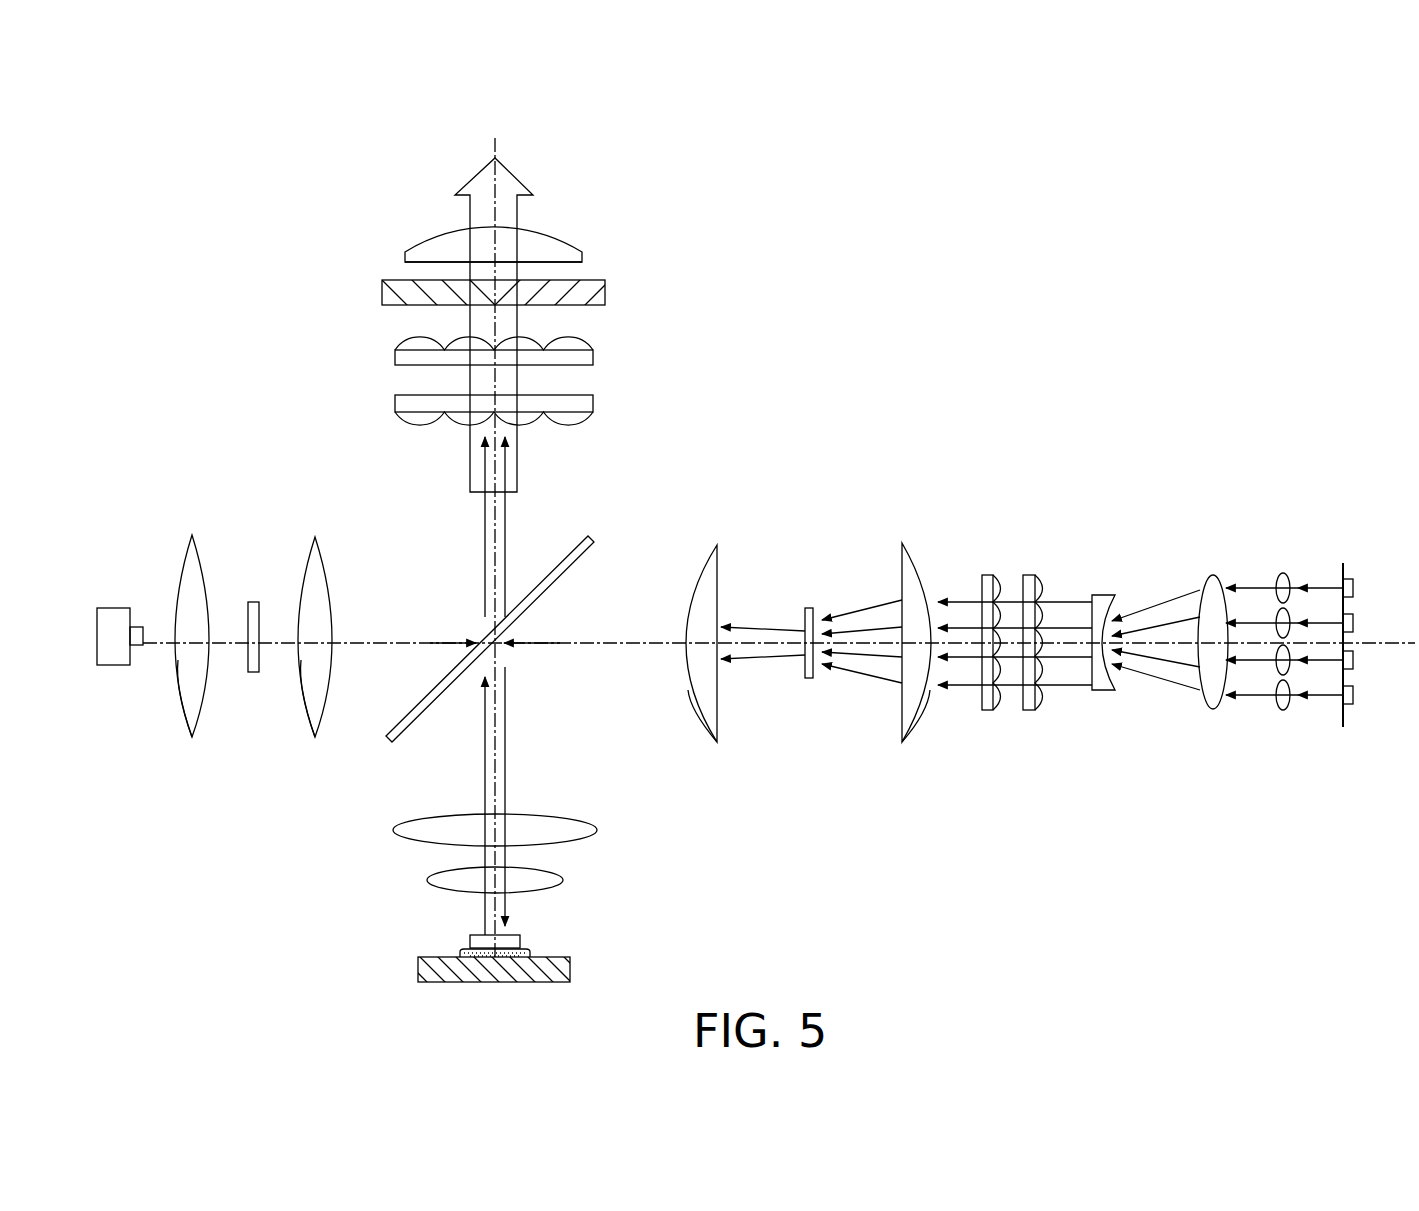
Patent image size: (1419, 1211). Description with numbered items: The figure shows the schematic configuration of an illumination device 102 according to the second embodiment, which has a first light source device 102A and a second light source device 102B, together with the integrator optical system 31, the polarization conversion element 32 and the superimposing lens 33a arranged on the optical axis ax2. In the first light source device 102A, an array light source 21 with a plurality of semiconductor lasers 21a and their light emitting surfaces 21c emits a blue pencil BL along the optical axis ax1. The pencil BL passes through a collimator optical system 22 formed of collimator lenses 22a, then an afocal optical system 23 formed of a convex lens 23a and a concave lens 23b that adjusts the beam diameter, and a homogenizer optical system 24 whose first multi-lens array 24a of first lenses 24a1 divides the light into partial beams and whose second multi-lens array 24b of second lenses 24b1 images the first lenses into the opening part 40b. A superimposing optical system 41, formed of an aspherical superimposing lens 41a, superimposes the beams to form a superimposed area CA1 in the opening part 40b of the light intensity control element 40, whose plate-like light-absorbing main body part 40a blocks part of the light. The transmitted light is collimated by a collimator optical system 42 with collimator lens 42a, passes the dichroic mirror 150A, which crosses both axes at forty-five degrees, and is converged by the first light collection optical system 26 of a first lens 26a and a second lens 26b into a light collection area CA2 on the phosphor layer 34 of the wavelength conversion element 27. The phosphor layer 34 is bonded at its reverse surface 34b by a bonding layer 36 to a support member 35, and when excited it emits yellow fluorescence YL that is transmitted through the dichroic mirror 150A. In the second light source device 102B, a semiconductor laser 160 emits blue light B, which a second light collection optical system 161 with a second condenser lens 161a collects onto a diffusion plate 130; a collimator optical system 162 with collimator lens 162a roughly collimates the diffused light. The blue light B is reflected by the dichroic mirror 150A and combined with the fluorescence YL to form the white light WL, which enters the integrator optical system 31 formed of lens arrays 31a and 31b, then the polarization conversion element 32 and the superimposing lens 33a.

The illumination device 102 is at (900, 288).
The first light source device 102A is at (628, 518).
The second light source device 102B is at (217, 443).
The array light source 21 is at (1377, 643).
The semiconductor laser 21a is at (1356, 582).
The light emitting surface 21c is at (1348, 730).
The collimator optical system 22 is at (1284, 625).
The collimator lens for laser 22a is at (1280, 572).
The afocal optical system 23 is at (1160, 578).
The convex lens 23a is at (1209, 568).
The concave lens 23b is at (1105, 585).
The homogenizer optical system 24 is at (1013, 578).
The first multi-lens array 24a is at (1028, 568).
The first lens 24a1 is at (1043, 672).
The second multi-lens array 24b is at (990, 568).
The second lens 24b1 is at (1000, 672).
The first light collection optical system 26 is at (562, 855).
The first lens 26a is at (597, 828).
The second lens 26b is at (563, 880).
The wavelength conversion element 27 is at (481, 953).
The integrator optical system 31 is at (564, 381).
The lens array 31a is at (593, 405).
The lens array 31b is at (593, 357).
The polarization conversion element 32 is at (605, 293).
The superimposing lens 33a is at (582, 240).
The phosphor layer 34 is at (520, 945).
The reverse surface 34b is at (497, 958).
The support member 35 is at (430, 975).
The bonding layer 36 is at (530, 952).
The light intensity control element 40 is at (810, 604).
The main body part 40a is at (810, 680).
The opening part 40b is at (805, 655).
The superimposing optical system 41 is at (915, 543).
The superimposing lens 41a is at (925, 718).
The collimator optical system 42 is at (705, 543).
The collimator lens 42a is at (695, 708).
The diffusion plate 130 is at (251, 600).
The dichroic mirror 150A is at (548, 585).
The semiconductor laser 160 is at (112, 604).
The second light collection optical system 161 is at (189, 533).
The second condenser lens 161a is at (183, 722).
The collimator optical system 162 is at (311, 535).
The collimator lens 162a is at (306, 722).
The blue light B is at (505, 567).
The pencil BL is at (505, 765).
The fluorescence YL is at (485, 590).
The white light WL is at (470, 208).
The superimposed area CA1 is at (836, 662).
The light collection area CA2 is at (474, 927).
The optical axis ax1 is at (1380, 645).
The optical axis ax2 is at (497, 141).